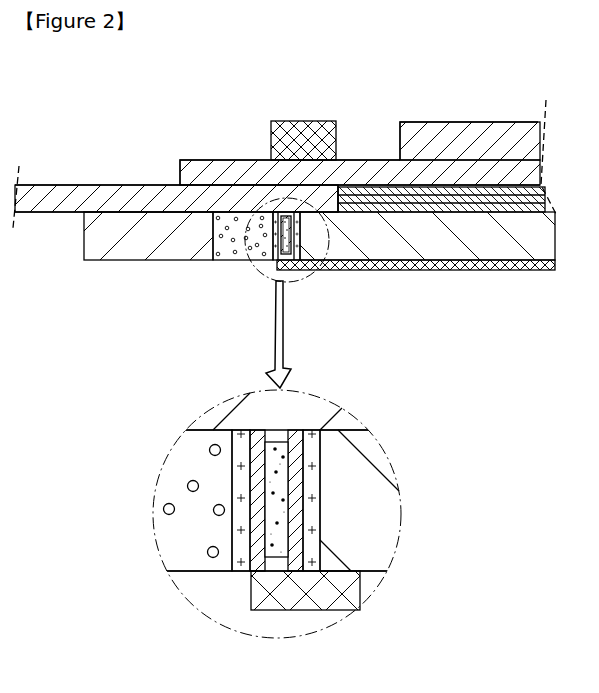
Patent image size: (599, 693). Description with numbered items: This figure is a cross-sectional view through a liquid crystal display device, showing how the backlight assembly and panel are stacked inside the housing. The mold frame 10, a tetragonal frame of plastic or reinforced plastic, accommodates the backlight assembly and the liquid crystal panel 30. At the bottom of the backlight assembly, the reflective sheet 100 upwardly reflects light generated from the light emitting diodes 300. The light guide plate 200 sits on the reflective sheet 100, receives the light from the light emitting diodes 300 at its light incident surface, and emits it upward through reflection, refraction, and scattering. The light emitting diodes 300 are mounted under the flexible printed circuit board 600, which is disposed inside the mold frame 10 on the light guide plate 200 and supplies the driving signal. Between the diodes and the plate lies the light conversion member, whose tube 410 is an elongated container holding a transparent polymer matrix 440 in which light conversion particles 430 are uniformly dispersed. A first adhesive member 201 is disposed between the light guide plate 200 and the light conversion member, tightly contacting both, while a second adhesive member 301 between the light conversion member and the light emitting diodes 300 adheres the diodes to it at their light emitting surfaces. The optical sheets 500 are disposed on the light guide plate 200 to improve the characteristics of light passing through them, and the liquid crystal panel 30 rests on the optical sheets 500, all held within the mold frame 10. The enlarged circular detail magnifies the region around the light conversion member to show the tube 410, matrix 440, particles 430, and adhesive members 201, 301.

The mold frame 10 is at (125, 244).
The liquid crystal panel 30 is at (466, 138).
The reflective sheet 100 is at (350, 264).
The light guide plate 200 is at (413, 244).
The first adhesive member 201 is at (322, 543).
The light emitting diodes 300 is at (229, 250).
The second adhesive member 301 is at (242, 565).
The tube 410 is at (302, 510).
The light conversion particles 430 is at (315, 430).
The matrix 440 is at (265, 482).
The optical sheets 500 is at (472, 200).
The flexible printed circuit board 600 is at (121, 196).